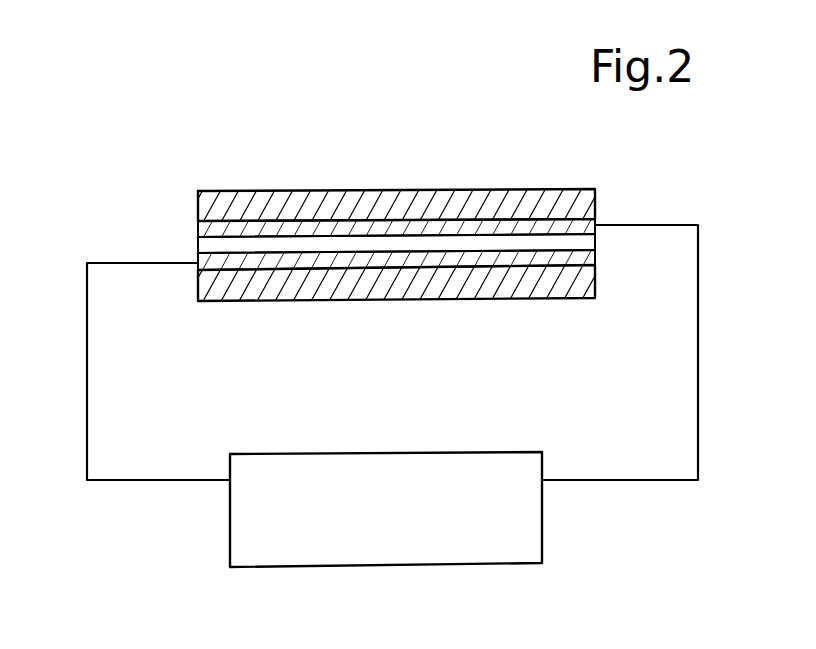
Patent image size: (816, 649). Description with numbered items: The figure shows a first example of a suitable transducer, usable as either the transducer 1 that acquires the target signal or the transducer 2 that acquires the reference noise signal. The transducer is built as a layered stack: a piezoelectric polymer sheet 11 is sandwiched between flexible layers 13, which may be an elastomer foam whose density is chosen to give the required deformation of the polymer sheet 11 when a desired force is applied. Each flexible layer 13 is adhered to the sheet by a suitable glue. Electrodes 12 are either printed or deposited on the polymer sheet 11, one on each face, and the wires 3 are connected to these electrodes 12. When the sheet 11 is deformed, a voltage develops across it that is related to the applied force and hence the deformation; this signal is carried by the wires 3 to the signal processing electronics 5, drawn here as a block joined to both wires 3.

The transducer 1 is at (404, 150).
The transducer 2 is at (393, 224).
The wires 3 is at (86, 331).
The signal processing electronics 5 is at (464, 522).
The piezoelectric polymer sheet 11 is at (599, 231).
The electrodes 12 is at (193, 227).
The flexible layers 13 is at (270, 190).